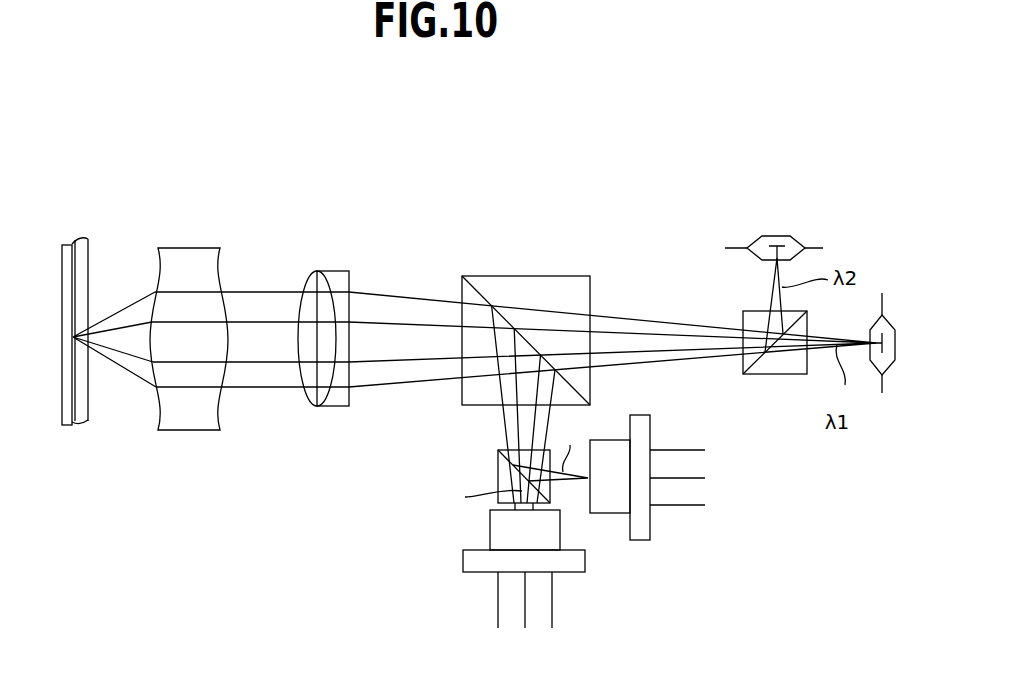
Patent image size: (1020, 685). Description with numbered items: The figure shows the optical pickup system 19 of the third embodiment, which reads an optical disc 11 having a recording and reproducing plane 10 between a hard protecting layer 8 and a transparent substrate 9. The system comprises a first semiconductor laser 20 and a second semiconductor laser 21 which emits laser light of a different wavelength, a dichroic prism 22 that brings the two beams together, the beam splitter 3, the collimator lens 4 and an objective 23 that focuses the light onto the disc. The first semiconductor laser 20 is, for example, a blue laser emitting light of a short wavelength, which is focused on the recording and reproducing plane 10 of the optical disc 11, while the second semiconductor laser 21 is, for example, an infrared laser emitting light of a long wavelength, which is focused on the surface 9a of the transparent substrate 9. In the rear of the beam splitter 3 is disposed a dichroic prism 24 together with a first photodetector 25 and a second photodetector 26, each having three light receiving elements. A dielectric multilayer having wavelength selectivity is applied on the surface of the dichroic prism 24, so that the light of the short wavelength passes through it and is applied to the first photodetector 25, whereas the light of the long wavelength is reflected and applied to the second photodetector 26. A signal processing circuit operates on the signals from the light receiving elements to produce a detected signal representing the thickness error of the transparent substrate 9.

The optical disc 11 is at (127, 190).
The hard protecting layer 8 is at (62, 260).
The recording and reproducing plane 10 is at (75, 248).
The transparent substrate 9 is at (88, 267).
The surface of the transparent substrate 9a is at (88, 395).
The objective 23 is at (193, 248).
The collimator lens 4 is at (333, 271).
The optical pickup system 19 is at (504, 246).
The beam splitter 3 is at (566, 276).
The dichroic prism 22 is at (505, 472).
The first semiconductor laser 20 is at (493, 530).
The second semiconductor laser 21 is at (605, 507).
The dichroic prism 24 is at (782, 367).
The first photodetector 25 is at (884, 310).
The second photodetector 26 is at (807, 238).